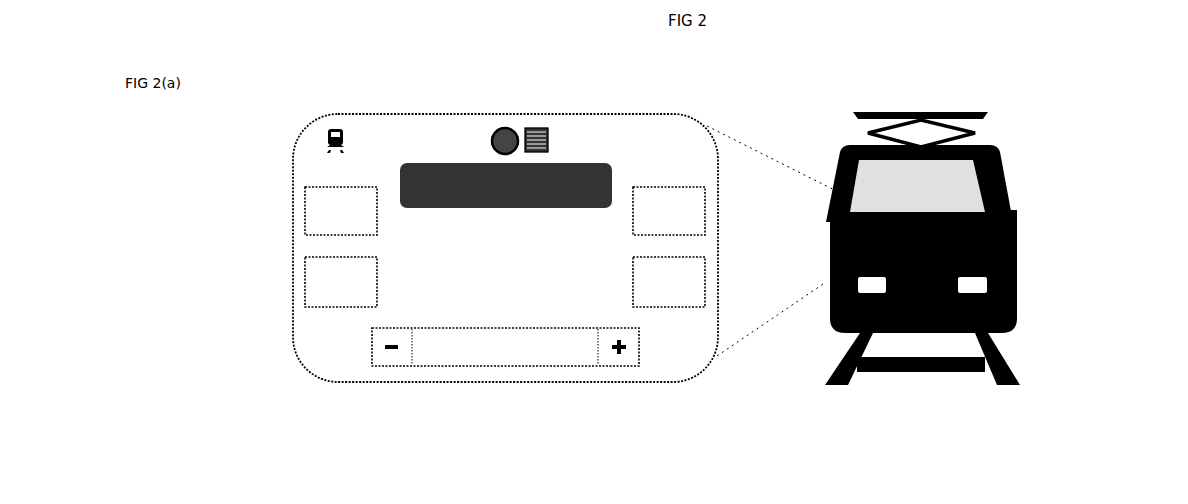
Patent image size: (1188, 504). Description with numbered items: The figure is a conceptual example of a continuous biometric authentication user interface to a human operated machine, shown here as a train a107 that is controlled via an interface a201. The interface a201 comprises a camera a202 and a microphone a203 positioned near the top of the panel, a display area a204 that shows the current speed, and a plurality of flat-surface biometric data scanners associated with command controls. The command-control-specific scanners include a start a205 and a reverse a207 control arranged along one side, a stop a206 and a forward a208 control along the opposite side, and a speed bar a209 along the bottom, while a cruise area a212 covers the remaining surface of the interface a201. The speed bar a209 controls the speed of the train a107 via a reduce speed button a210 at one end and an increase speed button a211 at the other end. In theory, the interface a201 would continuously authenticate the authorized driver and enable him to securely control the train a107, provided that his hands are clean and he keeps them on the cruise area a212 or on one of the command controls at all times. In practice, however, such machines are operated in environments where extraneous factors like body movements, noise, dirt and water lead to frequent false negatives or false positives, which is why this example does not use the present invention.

The train a107 is at (1010, 188).
The interface a201 is at (507, 382).
The camera a202 is at (506, 128).
The microphone a203 is at (537, 128).
The display area a204 is at (612, 185).
The start a205 is at (305, 212).
The stop a206 is at (305, 283).
The reverse a207 is at (705, 216).
The forward a208 is at (705, 290).
The speed bar a209 is at (530, 367).
The reduce speed button a210 is at (372, 345).
The increase speed button a211 is at (640, 350).
The cruise area a212 is at (445, 278).